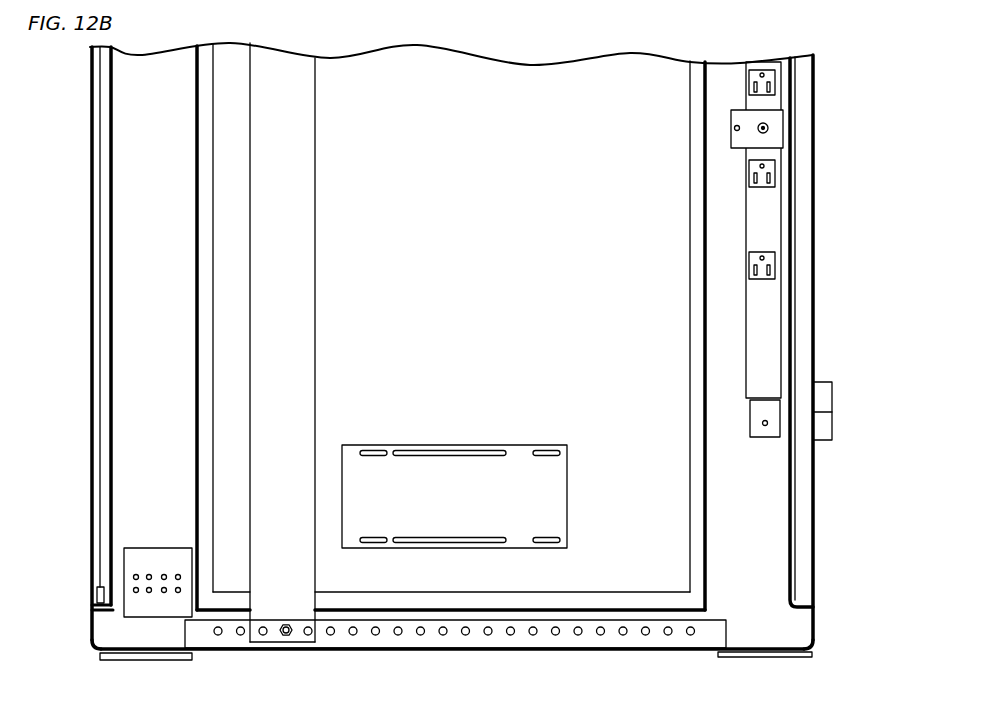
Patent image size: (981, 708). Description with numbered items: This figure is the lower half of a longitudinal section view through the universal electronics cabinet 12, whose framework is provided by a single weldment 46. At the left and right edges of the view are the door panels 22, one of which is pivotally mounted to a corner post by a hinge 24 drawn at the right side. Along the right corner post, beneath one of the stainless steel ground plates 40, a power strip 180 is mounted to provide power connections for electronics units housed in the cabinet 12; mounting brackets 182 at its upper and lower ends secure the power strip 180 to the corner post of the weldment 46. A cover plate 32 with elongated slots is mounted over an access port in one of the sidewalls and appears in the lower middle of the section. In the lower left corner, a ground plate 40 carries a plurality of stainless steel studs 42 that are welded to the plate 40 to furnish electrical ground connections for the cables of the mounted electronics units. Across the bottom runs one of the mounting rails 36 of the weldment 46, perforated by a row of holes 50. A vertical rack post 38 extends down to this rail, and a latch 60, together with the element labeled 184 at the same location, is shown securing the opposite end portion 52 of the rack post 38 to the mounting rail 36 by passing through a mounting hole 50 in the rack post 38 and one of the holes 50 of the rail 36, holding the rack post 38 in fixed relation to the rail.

The electronics cabinet 12 is at (82, 136).
The door panel 22 is at (105, 247).
The weldment 46 is at (140, 307).
The end portion 52 is at (267, 502).
The rack post 38 is at (310, 323).
The mounting rail 36 is at (457, 627).
The mounting hole 50 is at (512, 627).
The bracket 184 is at (283, 624).
The latch 60 is at (289, 625).
The ground plate 40 is at (150, 608).
The stud 42 is at (164, 576).
The cover plate 32 is at (519, 449).
The power strip 180 is at (768, 335).
The mounting bracket 182 is at (750, 135).
The hinge 24 is at (824, 423).